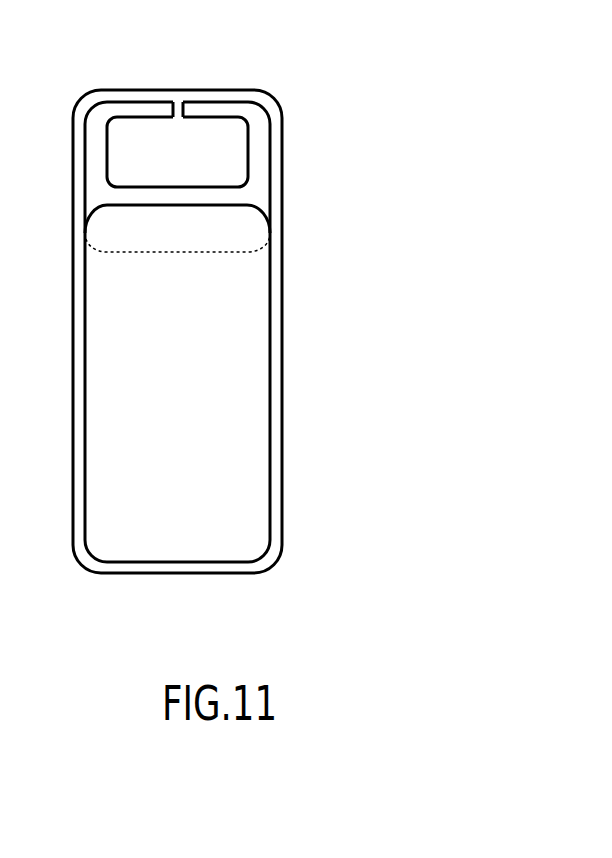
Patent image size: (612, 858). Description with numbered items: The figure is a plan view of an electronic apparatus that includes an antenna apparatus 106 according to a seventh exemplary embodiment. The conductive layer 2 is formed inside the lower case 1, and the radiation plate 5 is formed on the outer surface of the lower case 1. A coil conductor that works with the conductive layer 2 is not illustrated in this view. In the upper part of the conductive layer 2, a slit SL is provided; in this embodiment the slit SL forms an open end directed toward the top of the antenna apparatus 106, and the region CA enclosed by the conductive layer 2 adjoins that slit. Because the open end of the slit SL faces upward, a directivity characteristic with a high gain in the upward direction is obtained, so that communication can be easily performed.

The antenna apparatus 106 is at (423, 90).
The lower case 1 is at (268, 94).
The conductive layer 2 is at (258, 150).
The radiation plate 5 is at (258, 372).
The slit SL is at (176, 102).
The cavity CA is at (198, 137).